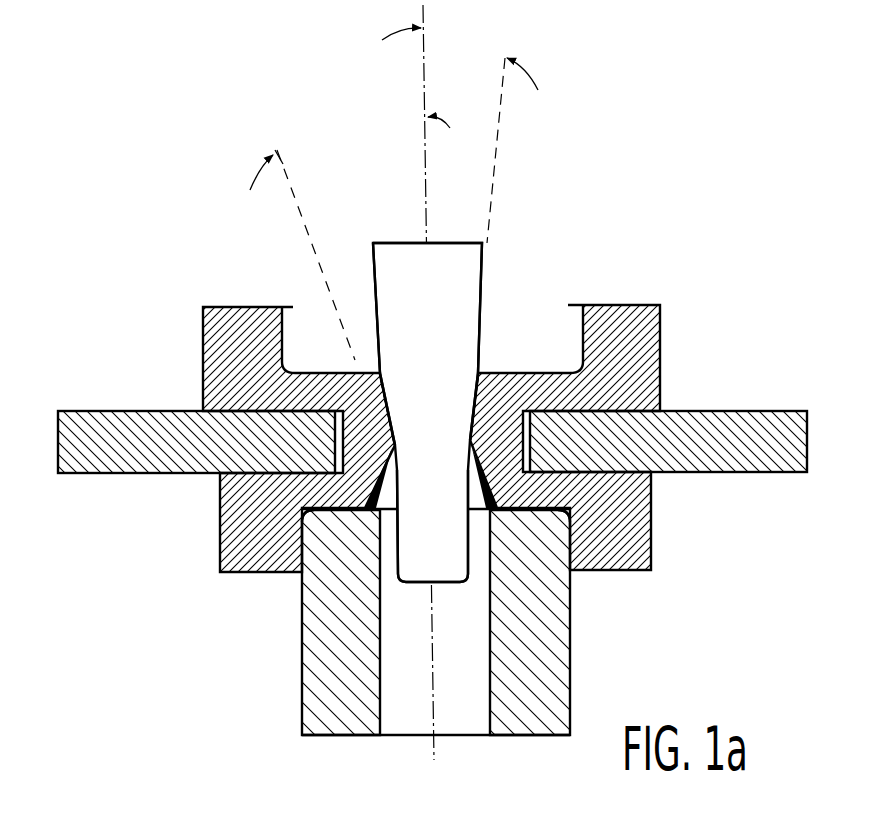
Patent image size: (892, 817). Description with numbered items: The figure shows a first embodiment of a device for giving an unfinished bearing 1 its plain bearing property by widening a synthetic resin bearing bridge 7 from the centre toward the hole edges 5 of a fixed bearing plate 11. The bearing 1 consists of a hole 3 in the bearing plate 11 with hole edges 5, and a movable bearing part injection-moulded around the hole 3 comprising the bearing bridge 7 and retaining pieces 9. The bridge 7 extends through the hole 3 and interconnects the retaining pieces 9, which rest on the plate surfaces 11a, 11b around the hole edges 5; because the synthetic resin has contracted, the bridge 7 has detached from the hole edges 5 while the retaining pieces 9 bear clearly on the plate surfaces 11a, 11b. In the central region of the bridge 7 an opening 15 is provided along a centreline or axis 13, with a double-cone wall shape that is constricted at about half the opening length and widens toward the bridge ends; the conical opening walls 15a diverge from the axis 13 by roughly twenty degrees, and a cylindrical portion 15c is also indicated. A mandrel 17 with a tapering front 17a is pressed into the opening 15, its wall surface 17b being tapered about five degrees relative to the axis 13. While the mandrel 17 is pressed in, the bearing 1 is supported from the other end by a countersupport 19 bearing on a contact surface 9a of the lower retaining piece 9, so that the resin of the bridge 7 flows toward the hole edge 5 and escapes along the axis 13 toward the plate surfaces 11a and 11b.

The unfinished bearing 1 is at (677, 287).
The hole 3 is at (537, 392).
The hole edges 5 is at (522, 429).
The bearing bridge 7 is at (347, 385).
The retaining pieces 9 is at (431, 457).
The contact surface 9a is at (525, 513).
The fixed bearing plate 11 is at (429, 434).
The plate surface 11a is at (90, 408).
The plate surface 11b is at (93, 475).
The centreline or axis 13 is at (424, 92).
The opening 15 is at (478, 372).
The conical opening walls 15a is at (383, 390).
The cylindrical pin portion 15c is at (480, 477).
The mandrel 17 is at (429, 415).
The tapering front 17a is at (443, 585).
The wall surface 17b is at (482, 337).
The countersupport 19 is at (560, 675).